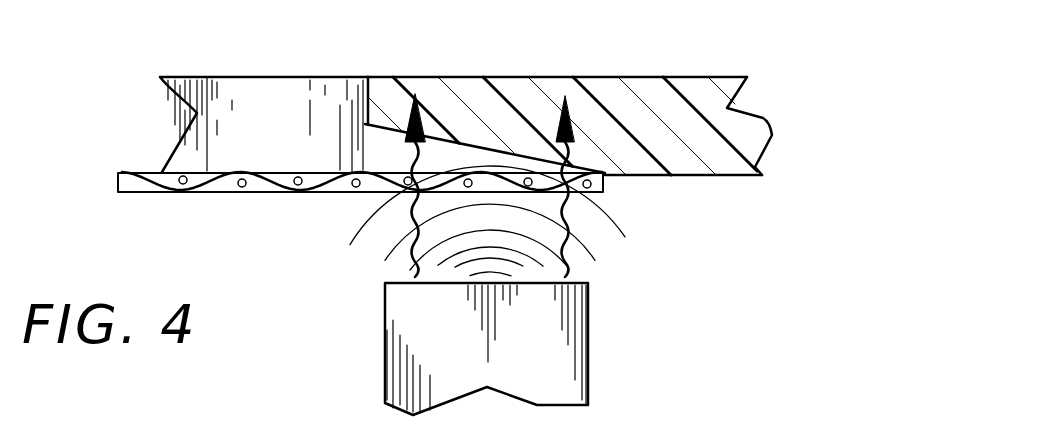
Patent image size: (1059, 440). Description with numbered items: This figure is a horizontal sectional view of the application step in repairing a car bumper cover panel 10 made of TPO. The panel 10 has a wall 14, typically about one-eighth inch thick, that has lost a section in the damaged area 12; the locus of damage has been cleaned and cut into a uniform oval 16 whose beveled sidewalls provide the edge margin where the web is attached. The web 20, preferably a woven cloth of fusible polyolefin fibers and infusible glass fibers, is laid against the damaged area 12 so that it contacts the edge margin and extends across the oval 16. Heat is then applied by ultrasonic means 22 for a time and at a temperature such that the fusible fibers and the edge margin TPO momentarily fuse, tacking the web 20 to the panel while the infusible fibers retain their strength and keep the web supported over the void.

The car bumper cover panel 10 is at (773, 132).
The damaged area 12 is at (205, 67).
The wall 14 is at (645, 98).
The oval 16 is at (365, 124).
The web 20 is at (258, 177).
The ultrasonic means 22 is at (566, 313).